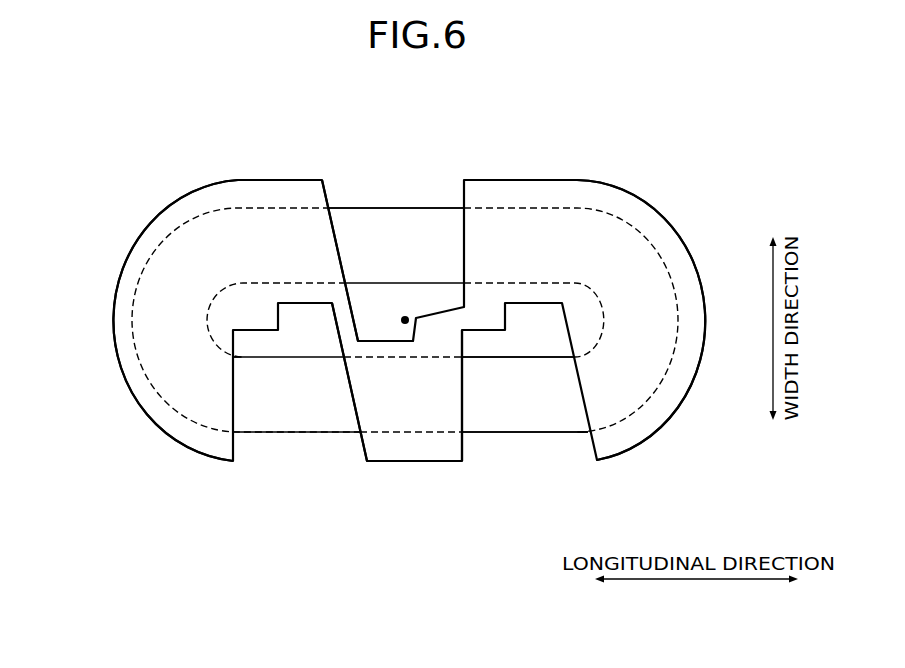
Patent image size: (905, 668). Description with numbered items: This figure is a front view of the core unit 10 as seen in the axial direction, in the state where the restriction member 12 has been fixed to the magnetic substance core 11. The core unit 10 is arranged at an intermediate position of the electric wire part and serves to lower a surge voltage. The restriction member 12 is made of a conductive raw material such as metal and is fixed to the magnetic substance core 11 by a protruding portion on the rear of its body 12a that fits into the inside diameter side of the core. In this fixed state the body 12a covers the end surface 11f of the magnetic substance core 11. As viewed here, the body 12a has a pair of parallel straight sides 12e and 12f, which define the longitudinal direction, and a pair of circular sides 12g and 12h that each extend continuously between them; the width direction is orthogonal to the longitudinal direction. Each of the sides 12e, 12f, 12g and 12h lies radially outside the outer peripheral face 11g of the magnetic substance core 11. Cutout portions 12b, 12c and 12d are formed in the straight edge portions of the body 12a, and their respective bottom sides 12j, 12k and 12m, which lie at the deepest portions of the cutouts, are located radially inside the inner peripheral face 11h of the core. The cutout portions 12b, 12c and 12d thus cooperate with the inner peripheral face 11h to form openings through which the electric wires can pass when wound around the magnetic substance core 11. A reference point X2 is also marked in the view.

The core unit 10 is at (472, 106).
The magnetic substance core 11 is at (412, 195).
The restriction member 12 is at (410, 270).
The end surface 11f is at (374, 221).
The outer peripheral face 11g is at (509, 434).
The inner peripheral face 11h is at (545, 356).
The body 12a is at (550, 152).
The first cutout portion 12b is at (345, 420).
The cutout portion 12c is at (345, 225).
The cutout portion 12d is at (481, 434).
The straight side 12e is at (292, 178).
The straight side 12f is at (392, 462).
The circular side 12g is at (104, 321).
The circular side 12h is at (707, 318).
The bottom side 12j is at (307, 305).
The bottom side 12k is at (384, 341).
The bottom side 12m is at (532, 304).
The reference point X2 is at (405, 325).